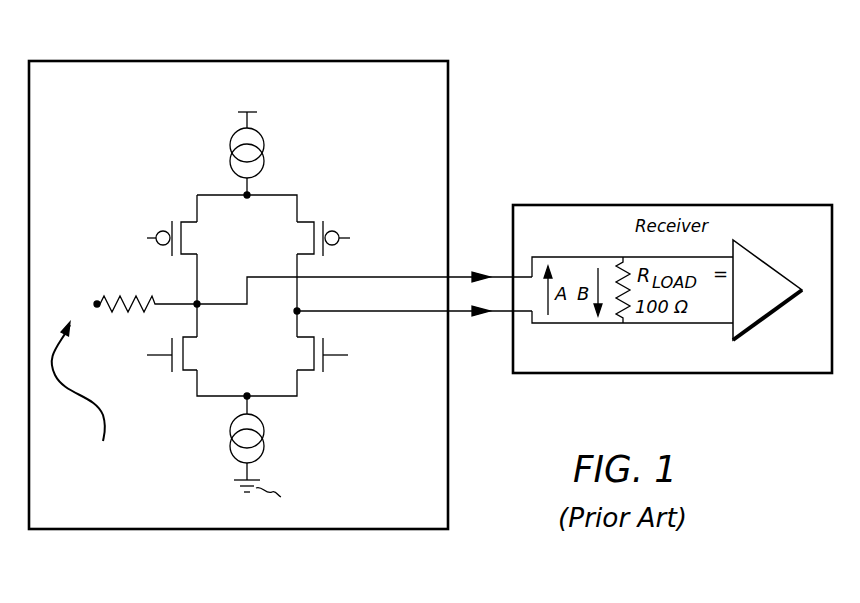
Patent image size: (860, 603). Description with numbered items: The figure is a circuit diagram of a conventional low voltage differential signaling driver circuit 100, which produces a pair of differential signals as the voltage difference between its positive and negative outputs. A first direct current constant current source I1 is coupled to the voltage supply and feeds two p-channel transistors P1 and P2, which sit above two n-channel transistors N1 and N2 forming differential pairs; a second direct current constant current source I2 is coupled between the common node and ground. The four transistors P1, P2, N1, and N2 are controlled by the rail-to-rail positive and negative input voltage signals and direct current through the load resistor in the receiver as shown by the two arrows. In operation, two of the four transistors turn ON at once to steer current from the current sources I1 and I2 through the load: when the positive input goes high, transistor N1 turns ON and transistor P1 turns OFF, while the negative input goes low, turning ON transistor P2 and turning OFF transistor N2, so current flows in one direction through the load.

The LVDS driver circuit 100 is at (238, 60).
The first direct current constant current source I1 is at (312, 161).
The second direct current constant current source I2 is at (313, 438).
The p-channel metal oxide semiconductor transistor P1 is at (185, 238).
The p-channel metal oxide semiconductor transistor P2 is at (312, 238).
The n-channel metal oxide semiconductor transistor N1 is at (185, 354).
The n-channel metal oxide semiconductor transistor N2 is at (311, 354).